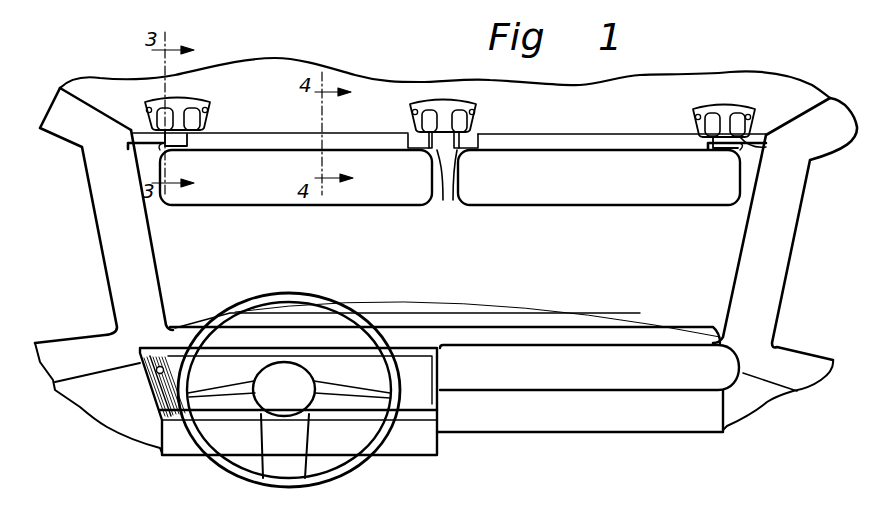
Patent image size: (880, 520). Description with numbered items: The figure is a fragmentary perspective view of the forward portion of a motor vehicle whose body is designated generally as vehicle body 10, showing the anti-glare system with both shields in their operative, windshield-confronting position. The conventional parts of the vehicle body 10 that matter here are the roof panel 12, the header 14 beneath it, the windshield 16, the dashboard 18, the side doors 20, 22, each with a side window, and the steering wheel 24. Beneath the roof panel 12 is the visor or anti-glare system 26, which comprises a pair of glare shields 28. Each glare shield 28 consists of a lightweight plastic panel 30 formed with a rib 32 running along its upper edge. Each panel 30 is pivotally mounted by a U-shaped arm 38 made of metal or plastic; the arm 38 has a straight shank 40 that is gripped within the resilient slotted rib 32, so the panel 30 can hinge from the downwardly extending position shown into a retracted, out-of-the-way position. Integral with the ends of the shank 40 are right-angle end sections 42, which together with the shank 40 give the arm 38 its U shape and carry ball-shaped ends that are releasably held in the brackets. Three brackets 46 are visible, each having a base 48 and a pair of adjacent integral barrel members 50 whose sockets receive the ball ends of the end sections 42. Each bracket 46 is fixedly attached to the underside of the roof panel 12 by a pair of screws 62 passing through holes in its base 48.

The vehicle body 10 is at (116, 479).
The roof panel 12 is at (272, 77).
The header 14 is at (633, 137).
The windshield 16 is at (697, 290).
The dashboard 18 is at (560, 377).
The side door 20 is at (112, 408).
The side door 22 is at (760, 390).
The steering wheel 24 is at (352, 470).
The visor or anti-glare system 26 is at (434, 216).
The glare shield 28 is at (244, 214).
The panel 30 is at (355, 194).
The rib 32 is at (389, 182).
The U-shaped arm 38 is at (146, 149).
The shank 40 is at (180, 150).
The end section 42 is at (446, 197).
The bracket 46 is at (198, 91).
The base 48 is at (430, 110).
The barrel member 50 is at (213, 117).
The screw 62 is at (143, 108).